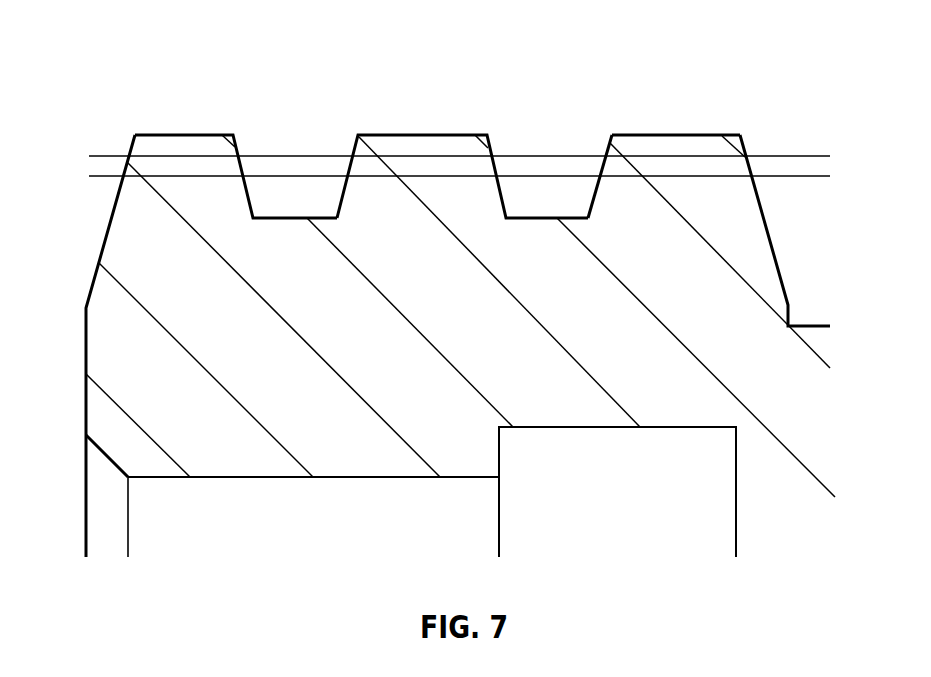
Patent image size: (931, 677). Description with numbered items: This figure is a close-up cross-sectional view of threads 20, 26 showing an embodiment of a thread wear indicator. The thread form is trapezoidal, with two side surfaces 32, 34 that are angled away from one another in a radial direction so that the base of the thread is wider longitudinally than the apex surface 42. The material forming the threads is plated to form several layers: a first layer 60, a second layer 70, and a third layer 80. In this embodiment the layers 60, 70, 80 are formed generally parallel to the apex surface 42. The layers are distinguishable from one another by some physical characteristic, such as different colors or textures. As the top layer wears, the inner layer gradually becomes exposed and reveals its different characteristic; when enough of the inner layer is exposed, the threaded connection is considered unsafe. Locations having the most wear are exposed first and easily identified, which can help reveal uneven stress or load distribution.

The threads 20 is at (462, 133).
The threads 26 is at (435, 119).
The side surface 32 is at (610, 142).
The side surface 34 is at (743, 147).
The apex surface 42 is at (674, 134).
The first layer 60 is at (120, 242).
The second layer 70 is at (140, 166).
The third layer 80 is at (140, 143).